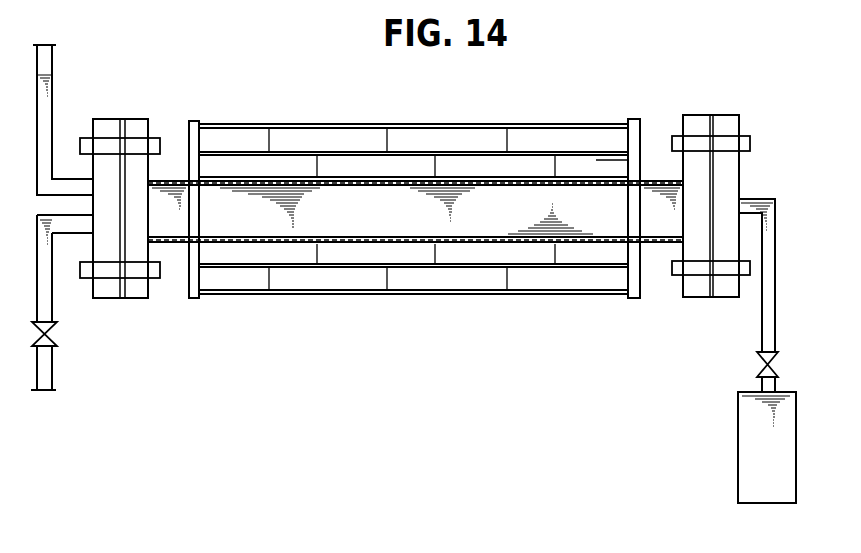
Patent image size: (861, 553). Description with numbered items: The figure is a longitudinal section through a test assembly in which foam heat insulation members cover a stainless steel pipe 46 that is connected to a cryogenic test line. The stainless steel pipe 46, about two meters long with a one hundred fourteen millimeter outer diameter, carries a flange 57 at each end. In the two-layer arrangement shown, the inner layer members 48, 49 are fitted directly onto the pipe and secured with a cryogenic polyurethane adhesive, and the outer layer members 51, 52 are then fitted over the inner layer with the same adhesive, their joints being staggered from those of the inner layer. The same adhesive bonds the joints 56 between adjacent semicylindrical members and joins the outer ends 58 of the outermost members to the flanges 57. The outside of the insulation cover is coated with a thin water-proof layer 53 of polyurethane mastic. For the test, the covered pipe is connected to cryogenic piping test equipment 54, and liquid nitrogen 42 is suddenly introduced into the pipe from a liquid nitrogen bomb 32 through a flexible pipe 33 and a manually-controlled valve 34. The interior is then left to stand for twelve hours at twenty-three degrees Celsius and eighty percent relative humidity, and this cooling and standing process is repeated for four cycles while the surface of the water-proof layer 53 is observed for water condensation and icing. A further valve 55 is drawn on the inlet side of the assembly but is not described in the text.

The liquid nitrogen bomb 32 is at (738, 437).
The flexible pipe 33 is at (762, 327).
The manually-controlled valve 34 is at (757, 367).
The liquid nitrogen 42 is at (250, 200).
The stainless steel pipe 46 is at (292, 178).
The inner layer member 48 is at (495, 258).
The inner layer member 49 is at (525, 165).
The outer layer member 51 is at (451, 270).
The outer layer member 52 is at (453, 142).
The water-proof layer 53 is at (347, 127).
The cryogenic piping test equipment 54 is at (350, 302).
The inlet valve 55 is at (57, 334).
The joint 56 is at (435, 168).
The flange 57 is at (643, 132).
The outer end 58 is at (623, 163).